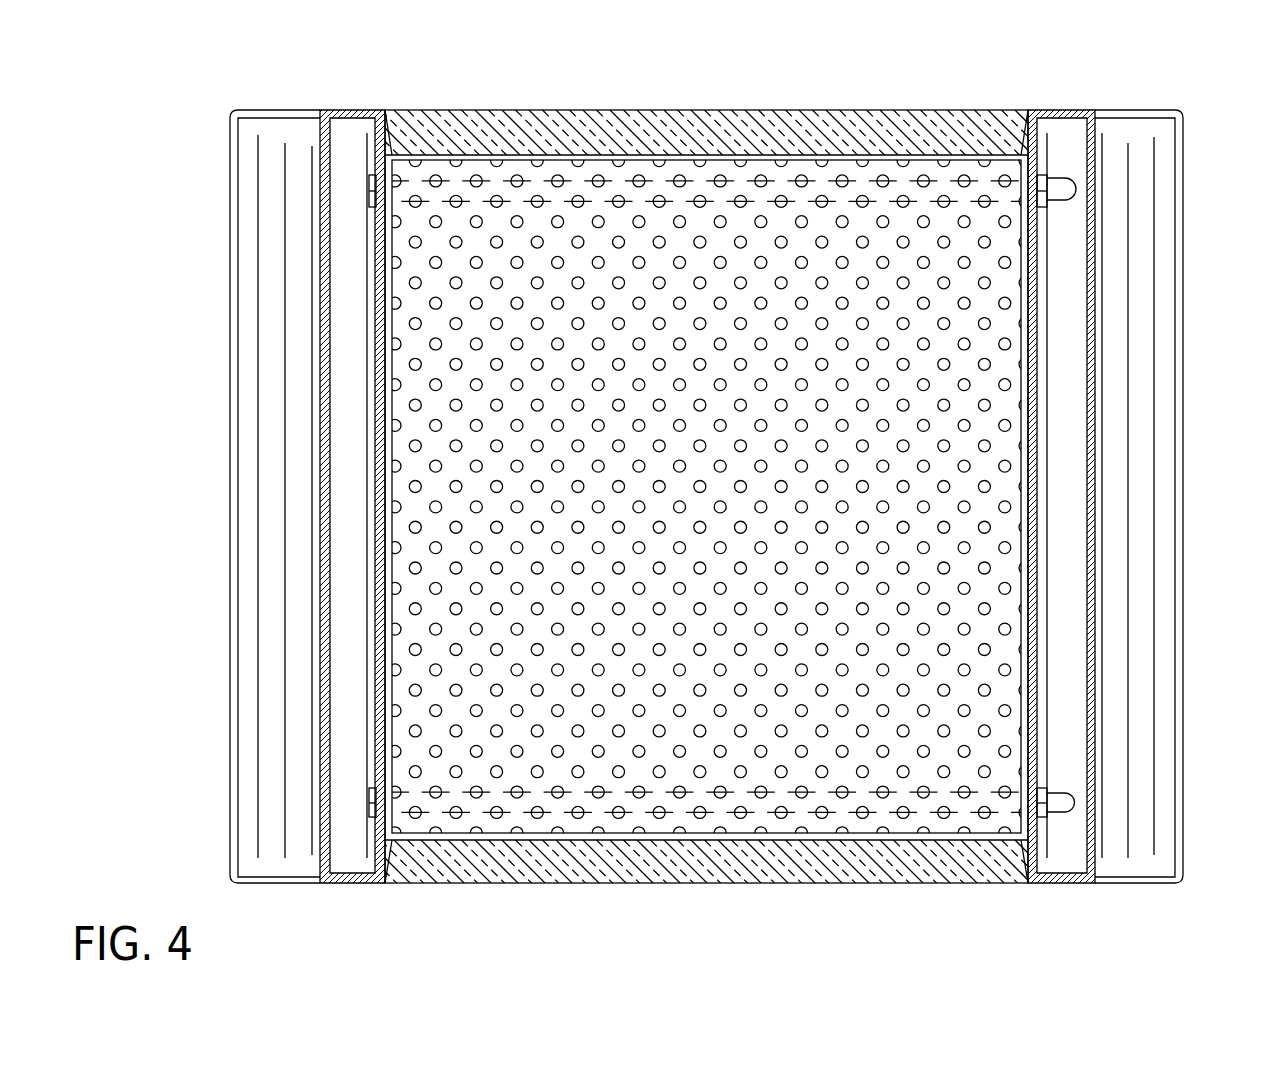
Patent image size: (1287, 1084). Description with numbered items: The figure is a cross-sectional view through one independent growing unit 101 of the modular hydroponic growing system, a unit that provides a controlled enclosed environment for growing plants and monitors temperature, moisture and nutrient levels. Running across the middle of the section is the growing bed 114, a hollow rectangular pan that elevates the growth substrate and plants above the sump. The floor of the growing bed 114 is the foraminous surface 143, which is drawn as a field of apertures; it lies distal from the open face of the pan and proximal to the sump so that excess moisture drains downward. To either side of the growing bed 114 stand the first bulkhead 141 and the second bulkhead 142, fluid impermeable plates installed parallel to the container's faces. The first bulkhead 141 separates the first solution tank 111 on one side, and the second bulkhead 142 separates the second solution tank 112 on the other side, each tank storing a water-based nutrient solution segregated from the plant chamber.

The independent growing unit 101 is at (128, 197).
The first solution tank 111 is at (350, 477).
The second solution tank 112 is at (1060, 507).
The growing bed 114 is at (553, 158).
The first bulkhead 141 is at (380, 380).
The second bulkhead 142 is at (1033, 362).
The foraminous surface 143 is at (795, 270).